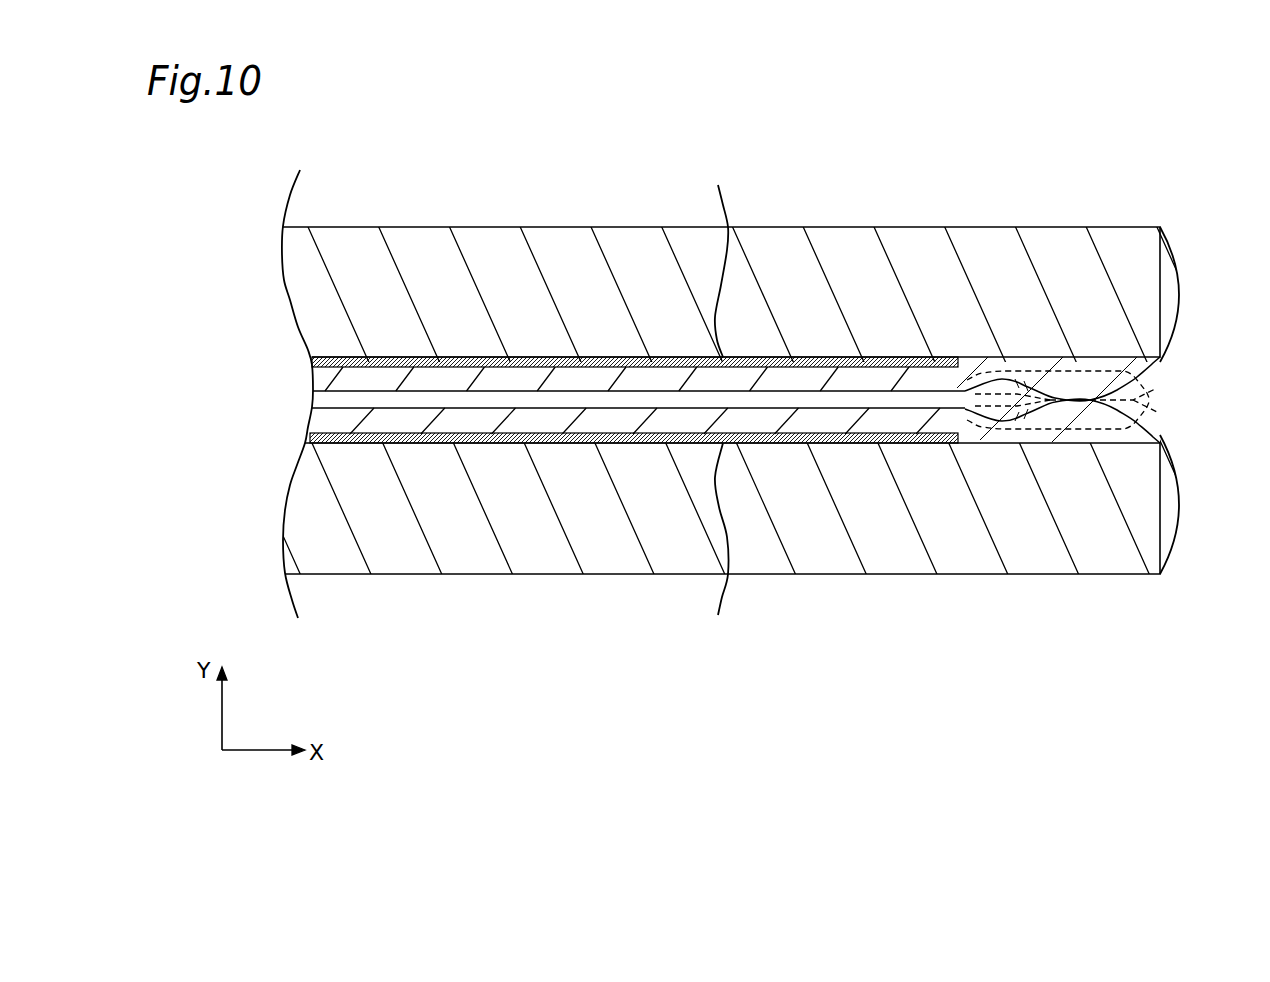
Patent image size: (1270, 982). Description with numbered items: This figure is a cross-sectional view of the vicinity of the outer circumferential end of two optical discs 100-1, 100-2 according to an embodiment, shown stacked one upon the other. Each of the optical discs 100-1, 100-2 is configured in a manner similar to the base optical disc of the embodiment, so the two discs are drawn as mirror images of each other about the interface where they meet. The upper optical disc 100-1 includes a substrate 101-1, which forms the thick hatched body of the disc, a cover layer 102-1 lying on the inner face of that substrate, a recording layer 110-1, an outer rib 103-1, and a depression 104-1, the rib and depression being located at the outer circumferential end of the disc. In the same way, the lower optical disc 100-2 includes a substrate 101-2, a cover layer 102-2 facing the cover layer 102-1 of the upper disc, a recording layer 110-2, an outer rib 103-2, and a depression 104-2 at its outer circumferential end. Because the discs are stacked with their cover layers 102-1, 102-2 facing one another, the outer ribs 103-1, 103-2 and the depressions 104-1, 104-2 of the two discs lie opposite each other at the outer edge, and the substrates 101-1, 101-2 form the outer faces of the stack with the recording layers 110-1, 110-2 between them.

The optical disc 100-1 is at (721, 283).
The optical disc 100-2 is at (721, 538).
The substrate 101-1 is at (312, 303).
The substrate 101-2 is at (312, 505).
The cover layer 102-1 is at (325, 380).
The cover layer 102-2 is at (320, 422).
The outer rib 103-1 is at (1157, 387).
The outer rib 103-2 is at (1157, 413).
The depression 104-1 is at (1010, 378).
The depression 104-2 is at (1010, 422).
The recording layer 110-1 is at (719, 256).
The recording layer 110-2 is at (719, 547).